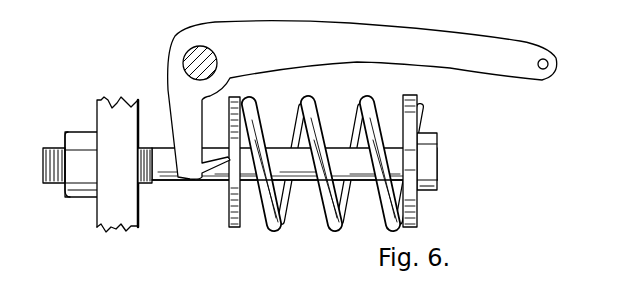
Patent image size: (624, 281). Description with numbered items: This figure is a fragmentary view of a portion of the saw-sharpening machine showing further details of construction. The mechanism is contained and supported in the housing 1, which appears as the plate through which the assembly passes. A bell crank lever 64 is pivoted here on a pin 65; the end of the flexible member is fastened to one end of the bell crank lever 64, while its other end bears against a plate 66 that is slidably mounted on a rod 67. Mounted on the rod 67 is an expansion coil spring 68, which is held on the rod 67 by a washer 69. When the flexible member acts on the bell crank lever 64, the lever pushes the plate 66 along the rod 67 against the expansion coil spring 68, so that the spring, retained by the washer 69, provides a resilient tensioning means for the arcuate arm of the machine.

The housing 1 is at (108, 215).
The bell crank lever 64 is at (477, 44).
The pivot pin 65 is at (187, 54).
The plate 66 is at (230, 225).
The rod 67 is at (162, 172).
The expansion coil spring 68 is at (338, 216).
The washer 69 is at (413, 113).